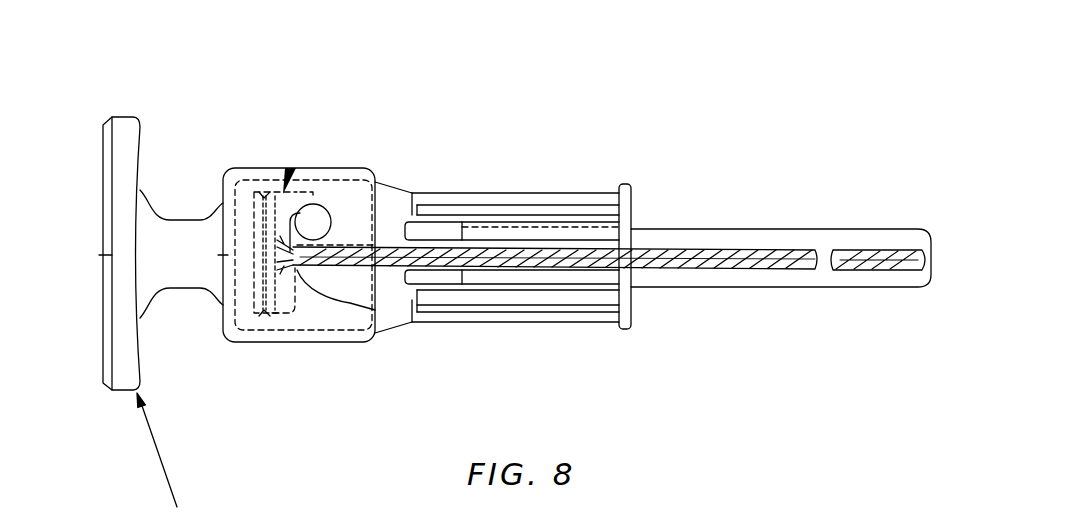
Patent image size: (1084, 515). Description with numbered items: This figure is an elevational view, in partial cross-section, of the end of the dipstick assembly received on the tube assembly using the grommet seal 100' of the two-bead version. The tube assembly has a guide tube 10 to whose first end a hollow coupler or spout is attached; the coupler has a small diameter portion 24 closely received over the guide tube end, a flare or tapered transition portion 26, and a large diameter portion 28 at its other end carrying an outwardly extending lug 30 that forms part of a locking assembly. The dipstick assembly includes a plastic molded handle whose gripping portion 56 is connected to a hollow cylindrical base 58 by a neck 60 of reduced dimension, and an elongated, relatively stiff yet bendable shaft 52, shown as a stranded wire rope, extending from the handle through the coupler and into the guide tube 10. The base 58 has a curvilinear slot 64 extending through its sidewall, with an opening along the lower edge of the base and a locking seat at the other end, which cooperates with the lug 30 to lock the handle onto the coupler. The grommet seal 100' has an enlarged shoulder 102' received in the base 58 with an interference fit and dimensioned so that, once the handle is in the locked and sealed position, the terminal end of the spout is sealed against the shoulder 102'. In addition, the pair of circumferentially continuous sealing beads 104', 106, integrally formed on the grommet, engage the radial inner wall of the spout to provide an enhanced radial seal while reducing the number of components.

The guide tube 10 is at (867, 240).
The small diameter portion 24 is at (543, 197).
The flare or tapered transition portion 26 is at (397, 192).
The large diameter portion 28 is at (362, 318).
The outwardly extending lug 30 is at (313, 220).
The shaft 52 is at (732, 252).
The gripping portion 56 is at (115, 200).
The hollow cylindrical base 58 is at (265, 167).
The neck 60 is at (177, 273).
The slot 64 is at (350, 305).
The grommet seal 100' is at (314, 200).
The enlarged shoulder 102' is at (290, 220).
The sealing bead 104' is at (245, 308).
The sealing bead 106 is at (275, 318).